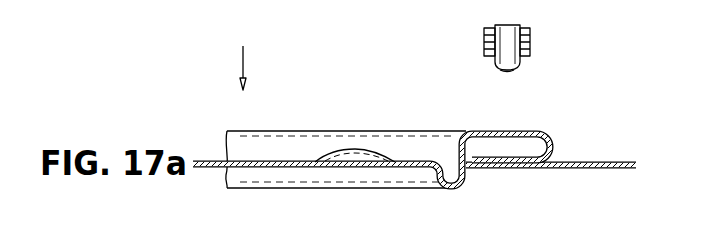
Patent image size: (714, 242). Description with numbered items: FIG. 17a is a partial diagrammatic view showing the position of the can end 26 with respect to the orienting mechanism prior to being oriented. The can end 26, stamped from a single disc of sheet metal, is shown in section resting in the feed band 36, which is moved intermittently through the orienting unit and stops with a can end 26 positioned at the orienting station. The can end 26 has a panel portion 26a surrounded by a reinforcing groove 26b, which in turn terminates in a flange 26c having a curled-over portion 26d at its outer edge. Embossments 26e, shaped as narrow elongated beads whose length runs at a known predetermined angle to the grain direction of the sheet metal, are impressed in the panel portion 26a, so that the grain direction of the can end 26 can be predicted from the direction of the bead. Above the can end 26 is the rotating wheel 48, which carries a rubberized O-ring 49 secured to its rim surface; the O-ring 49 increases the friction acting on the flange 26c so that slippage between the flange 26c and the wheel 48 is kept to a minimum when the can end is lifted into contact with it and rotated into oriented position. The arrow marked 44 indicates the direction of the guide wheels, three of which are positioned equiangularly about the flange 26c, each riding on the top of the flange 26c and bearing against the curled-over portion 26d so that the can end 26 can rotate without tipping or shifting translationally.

The can end 26 is at (278, 127).
The panel portion 26a is at (275, 167).
The reinforcing groove 26b is at (457, 191).
The flange 26c is at (522, 130).
The curled-over portion 26d is at (552, 138).
The embossments 26e is at (353, 149).
The feed band 36 is at (607, 162).
The guide wheels 44 is at (243, 66).
The rotating wheel 48 is at (531, 42).
The rubberized O-ring 49 is at (509, 71).